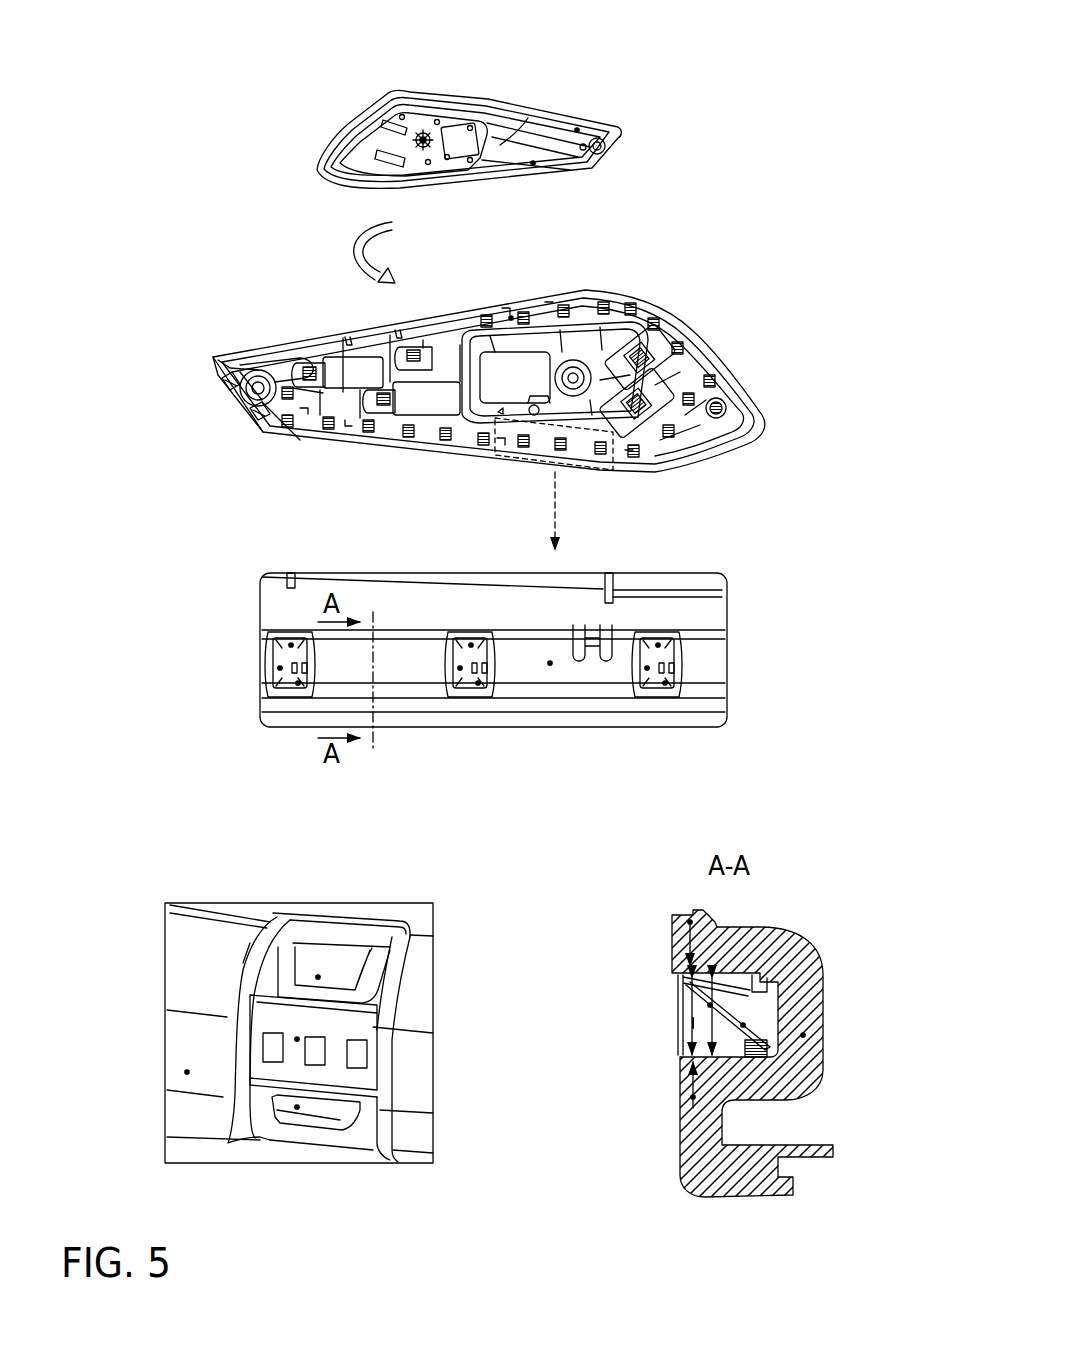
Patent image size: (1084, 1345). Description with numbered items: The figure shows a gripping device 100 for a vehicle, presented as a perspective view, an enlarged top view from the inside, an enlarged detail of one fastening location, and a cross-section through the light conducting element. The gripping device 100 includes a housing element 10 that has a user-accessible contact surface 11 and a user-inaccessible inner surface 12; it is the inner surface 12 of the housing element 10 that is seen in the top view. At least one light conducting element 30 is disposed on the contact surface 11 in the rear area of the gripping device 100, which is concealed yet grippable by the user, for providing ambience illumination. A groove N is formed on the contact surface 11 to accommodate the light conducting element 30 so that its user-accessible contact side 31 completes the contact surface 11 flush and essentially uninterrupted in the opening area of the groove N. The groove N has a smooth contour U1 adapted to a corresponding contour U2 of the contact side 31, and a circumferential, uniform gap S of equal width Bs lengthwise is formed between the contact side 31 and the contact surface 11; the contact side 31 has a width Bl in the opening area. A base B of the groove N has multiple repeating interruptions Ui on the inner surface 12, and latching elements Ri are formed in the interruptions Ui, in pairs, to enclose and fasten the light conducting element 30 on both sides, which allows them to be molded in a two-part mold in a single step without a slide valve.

The gripping device 100 is at (522, 88).
The user-accessible contact surface 11 is at (557, 125).
The housing element 10 is at (579, 129).
The user-inaccessible inner surface 12 is at (416, 321).
The light conducting element 30 is at (534, 165).
The user-accessible contact side 31 is at (683, 1023).
The interruptions Ui is at (578, 298).
The latching elements Ri is at (298, 685).
The groove N is at (712, 660).
The base B is at (187, 1072).
The width Bs is at (690, 922).
The width Bl is at (710, 1005).
The smooth contour U1 is at (673, 963).
The corresponding contour U2 is at (680, 978).
The gap S is at (680, 972).